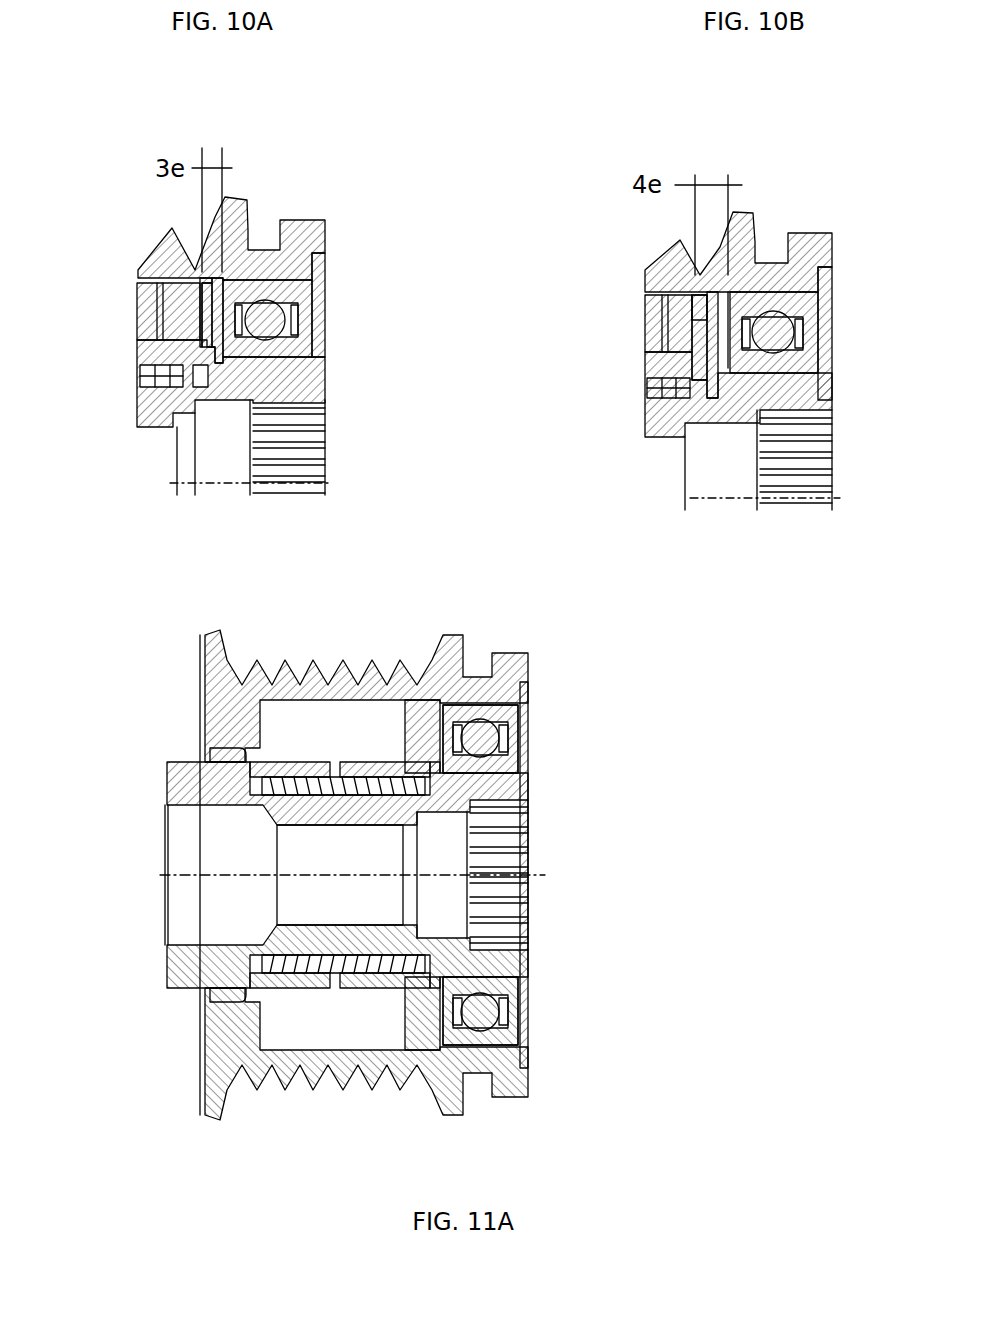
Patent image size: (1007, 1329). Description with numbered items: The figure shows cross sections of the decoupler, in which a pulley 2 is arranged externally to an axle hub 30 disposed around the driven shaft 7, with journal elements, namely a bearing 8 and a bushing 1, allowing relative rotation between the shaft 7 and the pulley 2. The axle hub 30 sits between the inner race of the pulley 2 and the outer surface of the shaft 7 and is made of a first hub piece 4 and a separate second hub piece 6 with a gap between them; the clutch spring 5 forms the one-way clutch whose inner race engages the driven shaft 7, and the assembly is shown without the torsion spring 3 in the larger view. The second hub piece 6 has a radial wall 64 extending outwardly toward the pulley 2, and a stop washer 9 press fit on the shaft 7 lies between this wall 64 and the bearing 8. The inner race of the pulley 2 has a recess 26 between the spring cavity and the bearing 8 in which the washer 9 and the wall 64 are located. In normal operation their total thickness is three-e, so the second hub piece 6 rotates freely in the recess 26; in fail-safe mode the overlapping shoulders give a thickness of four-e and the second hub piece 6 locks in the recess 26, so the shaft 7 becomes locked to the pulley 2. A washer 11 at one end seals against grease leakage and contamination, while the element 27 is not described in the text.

In FIG. 11A, the bushing 1 is at (215, 751).
In FIG. 10A, the pulley 2 is at (243, 228).
In FIG. 10B, the pulley 2 is at (810, 253).
In FIG. 11A, the pulley 2 is at (441, 668).
In FIG. 10A, the torsion spring 3 is at (143, 312).
In FIG. 11A, the first hub piece 4 is at (185, 978).
In FIG. 10A, the clutch spring 5 is at (143, 375).
In FIG. 10B, the clutch spring 5 is at (653, 330).
In FIG. 11A, the clutch spring 5 is at (427, 968).
In FIG. 11A, the second hub piece 6 is at (427, 1030).
In FIG. 10A, the shaft 7 is at (310, 380).
In FIG. 10B, the shaft 7 is at (798, 393).
In FIG. 11A, the shaft 7 is at (255, 958).
In FIG. 10A, the bearing 8 is at (302, 345).
In FIG. 10B, the bearing 8 is at (818, 365).
In FIG. 11A, the bearing 8 is at (507, 763).
In FIG. 10B, the stop washer 9 is at (718, 310).
In FIG. 10A, the washer 11 is at (318, 272).
In FIG. 10B, the washer 11 is at (825, 303).
In FIG. 11A, the washer 11 is at (522, 710).
In FIG. 10A, the recess 26 is at (215, 278).
In FIG. 10A, the lip 27 is at (200, 280).
In FIG. 10B, the lip 27 is at (702, 295).
In FIG. 11A, the axle hub 30 is at (355, 775).
In FIG. 10A, the radial wall 64 is at (212, 327).
In FIG. 10B, the radial wall 64 is at (702, 312).